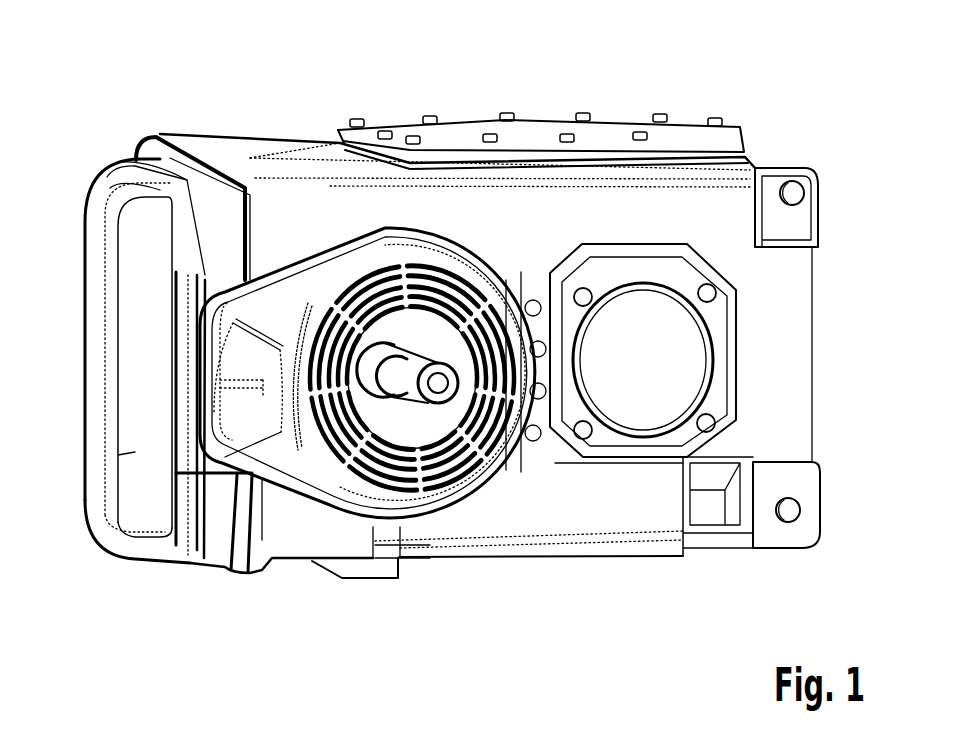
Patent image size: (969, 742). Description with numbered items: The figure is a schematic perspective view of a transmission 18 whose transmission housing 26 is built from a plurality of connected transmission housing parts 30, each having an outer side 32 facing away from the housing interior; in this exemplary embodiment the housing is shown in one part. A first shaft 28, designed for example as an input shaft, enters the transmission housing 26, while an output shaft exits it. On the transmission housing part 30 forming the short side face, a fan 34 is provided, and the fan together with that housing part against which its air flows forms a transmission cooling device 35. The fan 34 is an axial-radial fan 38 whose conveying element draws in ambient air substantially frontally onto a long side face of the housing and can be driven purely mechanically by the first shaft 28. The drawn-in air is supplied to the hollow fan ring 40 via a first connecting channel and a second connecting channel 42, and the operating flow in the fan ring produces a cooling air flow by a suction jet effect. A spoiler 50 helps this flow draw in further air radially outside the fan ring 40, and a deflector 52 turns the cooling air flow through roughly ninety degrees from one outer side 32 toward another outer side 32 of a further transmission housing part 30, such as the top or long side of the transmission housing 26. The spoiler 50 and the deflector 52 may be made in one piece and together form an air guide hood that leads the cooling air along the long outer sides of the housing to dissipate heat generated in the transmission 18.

The transmission 18 is at (745, 92).
The transmission housing 26 is at (580, 510).
The first shaft 28 is at (409, 395).
The transmission housing part 30 is at (543, 127).
The outer side 32 is at (610, 112).
The fan 34 is at (116, 448).
The transmission cooling device 35 is at (379, 582).
The axial-radial fan 38 is at (434, 414).
The hollow fan ring 40 is at (187, 242).
The second connecting channel 42 is at (233, 408).
The spoiler 50 is at (177, 135).
The deflector 52 is at (276, 148).